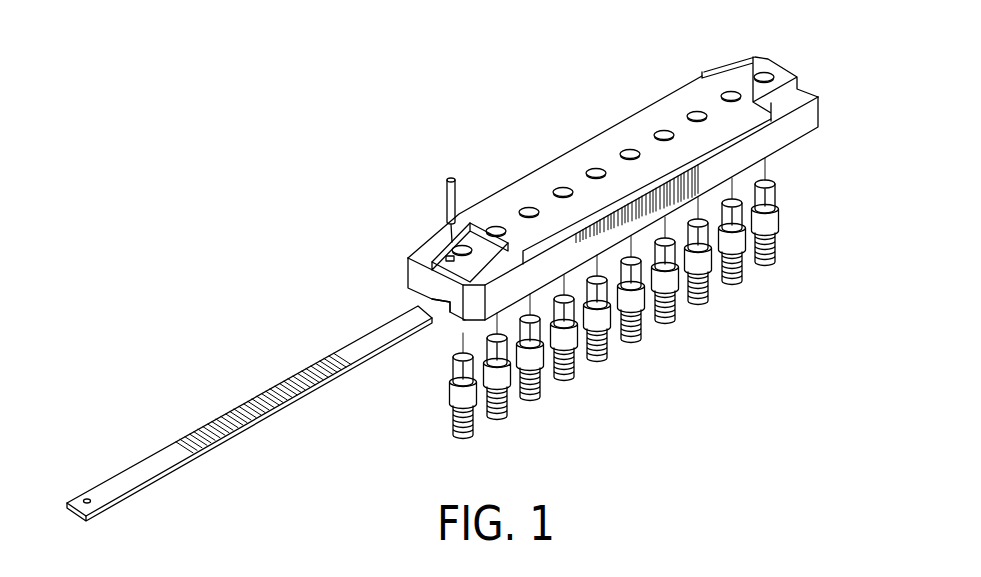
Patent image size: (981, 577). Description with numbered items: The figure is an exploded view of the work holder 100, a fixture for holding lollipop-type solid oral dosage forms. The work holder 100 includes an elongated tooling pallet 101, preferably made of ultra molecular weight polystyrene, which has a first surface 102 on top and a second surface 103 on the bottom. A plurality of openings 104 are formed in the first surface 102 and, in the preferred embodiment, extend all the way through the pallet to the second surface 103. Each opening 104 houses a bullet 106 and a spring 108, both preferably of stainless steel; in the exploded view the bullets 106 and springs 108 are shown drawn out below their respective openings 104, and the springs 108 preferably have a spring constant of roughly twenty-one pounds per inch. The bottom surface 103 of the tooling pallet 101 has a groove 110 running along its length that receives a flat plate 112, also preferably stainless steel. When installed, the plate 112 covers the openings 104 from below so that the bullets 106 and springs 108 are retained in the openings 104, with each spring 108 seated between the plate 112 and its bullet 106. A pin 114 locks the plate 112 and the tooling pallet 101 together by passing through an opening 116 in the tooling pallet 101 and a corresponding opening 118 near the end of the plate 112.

The work holder 100 is at (320, 163).
The tooling pallet 101 is at (535, 168).
The first surface 102 is at (603, 143).
The second surface 103 is at (797, 141).
The openings 104 is at (697, 112).
The bullet 106 is at (778, 222).
The spring 108 is at (735, 288).
The groove 110 is at (426, 297).
The plate 112 is at (238, 401).
The pin 114 is at (448, 177).
The opening 116 is at (432, 262).
The opening 118 is at (87, 499).